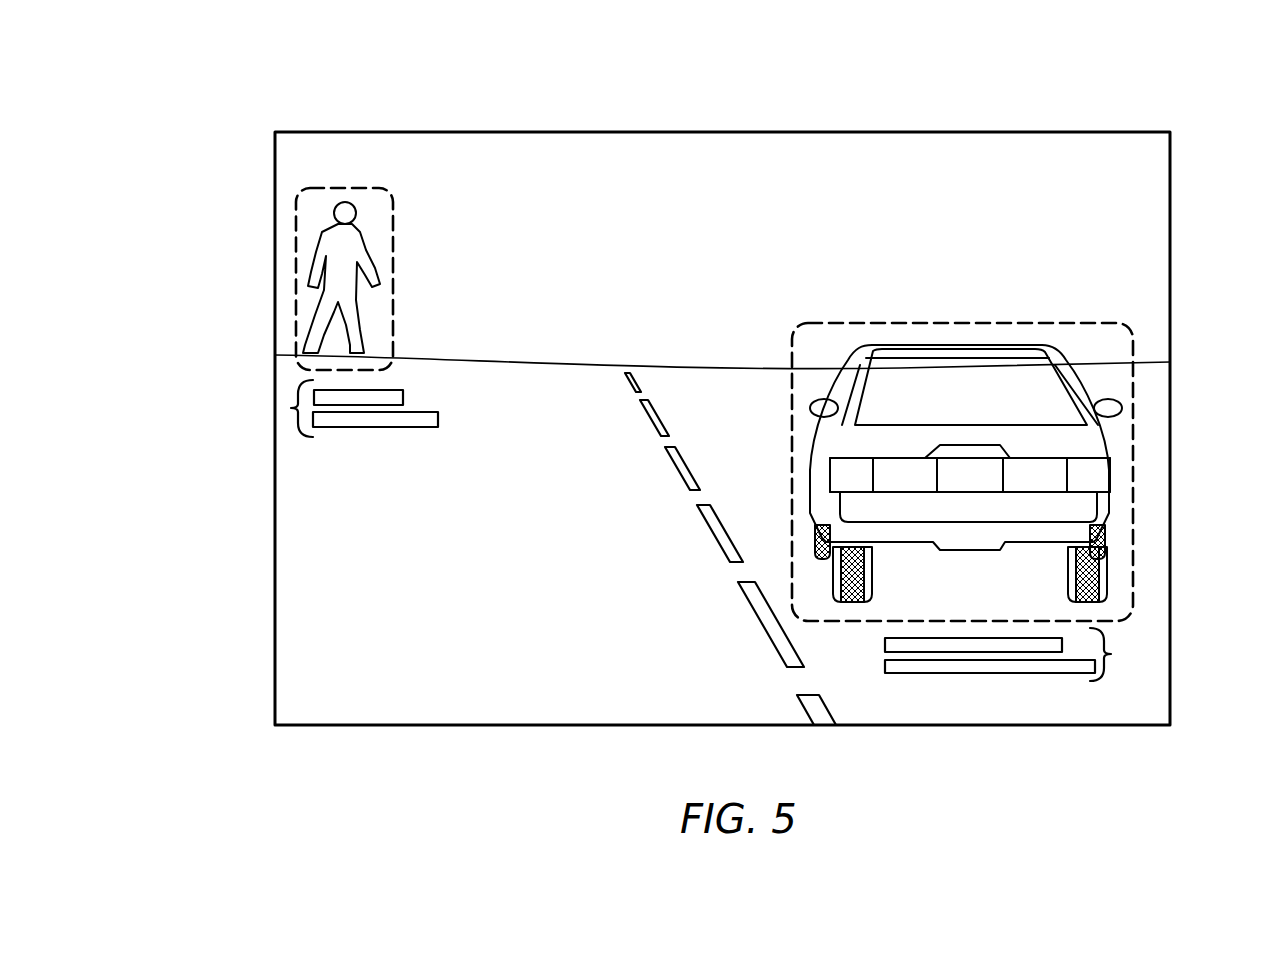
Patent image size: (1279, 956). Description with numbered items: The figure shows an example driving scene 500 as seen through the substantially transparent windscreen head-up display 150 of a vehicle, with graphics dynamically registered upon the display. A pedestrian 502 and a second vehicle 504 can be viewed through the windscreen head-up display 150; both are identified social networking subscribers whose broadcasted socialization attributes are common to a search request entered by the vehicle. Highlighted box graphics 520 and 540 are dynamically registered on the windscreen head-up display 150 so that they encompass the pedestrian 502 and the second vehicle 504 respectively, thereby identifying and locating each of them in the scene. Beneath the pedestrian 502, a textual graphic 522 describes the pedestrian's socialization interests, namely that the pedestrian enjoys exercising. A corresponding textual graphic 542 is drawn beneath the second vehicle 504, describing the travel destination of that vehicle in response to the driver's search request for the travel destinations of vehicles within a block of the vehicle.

The driving scene 500 is at (366, 98).
The substantially transparent windscreen head-up display 150 is at (722, 131).
The highlighted box graphic 520 is at (298, 212).
The pedestrian 502 is at (335, 263).
The textual graphic 522 is at (291, 408).
The highlighted box graphic 540 is at (963, 323).
The second vehicle 504 is at (1070, 440).
The vehicle classification confidence bars 542 is at (1114, 652).